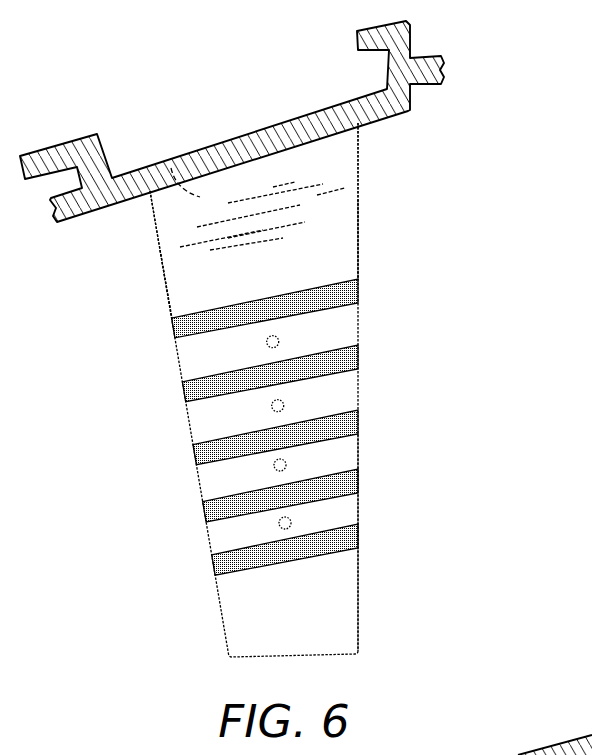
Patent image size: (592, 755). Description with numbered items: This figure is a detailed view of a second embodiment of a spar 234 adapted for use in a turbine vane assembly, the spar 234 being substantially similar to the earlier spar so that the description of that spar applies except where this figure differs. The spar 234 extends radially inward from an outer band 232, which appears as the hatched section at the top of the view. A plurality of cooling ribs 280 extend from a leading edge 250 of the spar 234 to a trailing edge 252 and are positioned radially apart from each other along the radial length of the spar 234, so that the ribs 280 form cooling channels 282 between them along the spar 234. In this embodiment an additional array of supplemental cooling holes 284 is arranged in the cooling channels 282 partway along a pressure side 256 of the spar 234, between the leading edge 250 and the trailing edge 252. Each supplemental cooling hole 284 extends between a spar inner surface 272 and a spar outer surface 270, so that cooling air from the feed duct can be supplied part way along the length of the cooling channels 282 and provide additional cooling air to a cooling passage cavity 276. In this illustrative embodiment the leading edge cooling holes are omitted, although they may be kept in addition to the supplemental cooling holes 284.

The outer band 232 is at (412, 33).
The spar 234 is at (365, 182).
The leading edge 250 is at (207, 612).
The trailing edge 252 is at (362, 578).
The pressure side 256 is at (282, 268).
The spar outer surface 270 is at (188, 277).
The spar inner surface 272 is at (170, 167).
The cooling passage cavity 276 is at (260, 238).
The cooling ribs 280 is at (355, 477).
The cooling channels 282 is at (340, 388).
The supplemental cooling holes 284 is at (274, 466).